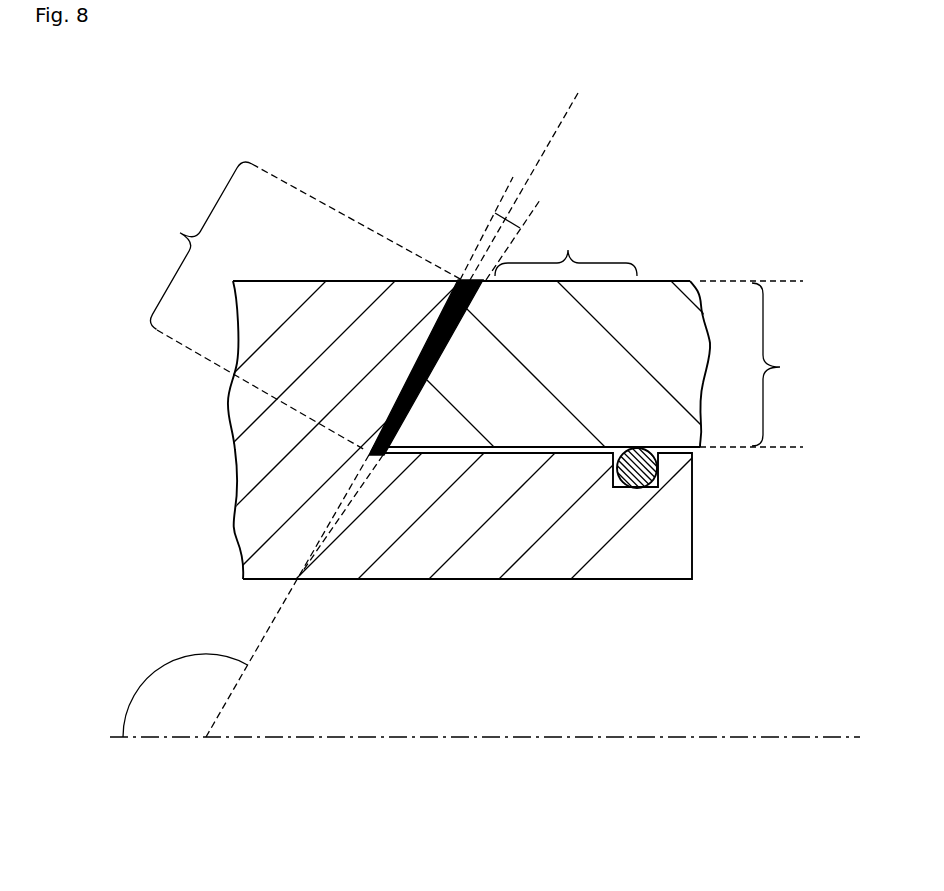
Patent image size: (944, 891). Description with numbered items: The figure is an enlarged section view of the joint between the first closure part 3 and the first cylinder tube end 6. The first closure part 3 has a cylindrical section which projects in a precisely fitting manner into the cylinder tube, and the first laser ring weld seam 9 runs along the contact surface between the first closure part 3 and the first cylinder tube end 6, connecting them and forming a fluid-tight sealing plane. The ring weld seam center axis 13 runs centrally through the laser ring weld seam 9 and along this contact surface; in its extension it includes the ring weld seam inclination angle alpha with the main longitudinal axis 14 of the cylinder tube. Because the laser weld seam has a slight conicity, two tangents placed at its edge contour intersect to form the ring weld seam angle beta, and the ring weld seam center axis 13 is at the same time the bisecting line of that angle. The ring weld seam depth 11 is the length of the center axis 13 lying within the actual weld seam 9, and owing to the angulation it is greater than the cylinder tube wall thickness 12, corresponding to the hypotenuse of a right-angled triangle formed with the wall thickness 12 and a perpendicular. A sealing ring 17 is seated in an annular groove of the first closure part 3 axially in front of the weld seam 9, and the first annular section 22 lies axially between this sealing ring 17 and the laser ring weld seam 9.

The first closure part 3 is at (308, 480).
The first cylinder tube end 6 is at (677, 320).
The first laser ring weld seam 9 is at (447, 308).
The ring weld seam depth 11 is at (297, 300).
The cylinder tube wall thickness 12 is at (759, 364).
The ring weld seam center axis 13 is at (560, 128).
The main longitudinal axis of the cylinder tube 14 is at (675, 737).
The sealing ring 17 is at (640, 484).
The first annular section 22 is at (566, 242).